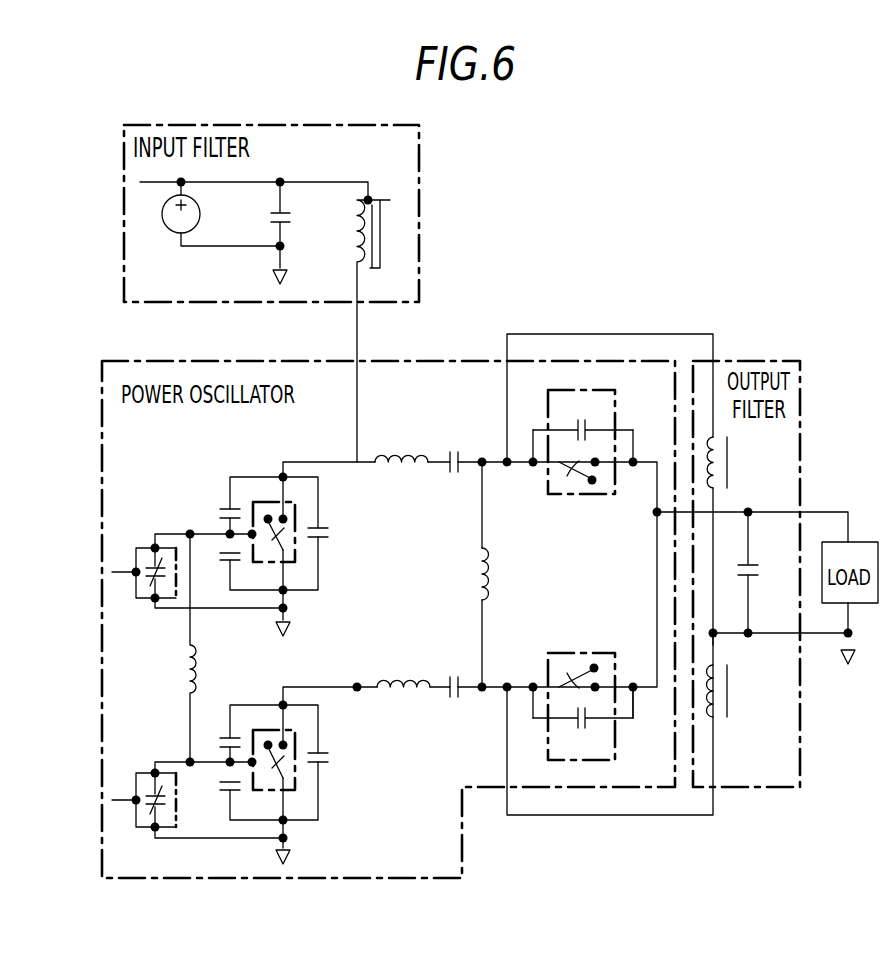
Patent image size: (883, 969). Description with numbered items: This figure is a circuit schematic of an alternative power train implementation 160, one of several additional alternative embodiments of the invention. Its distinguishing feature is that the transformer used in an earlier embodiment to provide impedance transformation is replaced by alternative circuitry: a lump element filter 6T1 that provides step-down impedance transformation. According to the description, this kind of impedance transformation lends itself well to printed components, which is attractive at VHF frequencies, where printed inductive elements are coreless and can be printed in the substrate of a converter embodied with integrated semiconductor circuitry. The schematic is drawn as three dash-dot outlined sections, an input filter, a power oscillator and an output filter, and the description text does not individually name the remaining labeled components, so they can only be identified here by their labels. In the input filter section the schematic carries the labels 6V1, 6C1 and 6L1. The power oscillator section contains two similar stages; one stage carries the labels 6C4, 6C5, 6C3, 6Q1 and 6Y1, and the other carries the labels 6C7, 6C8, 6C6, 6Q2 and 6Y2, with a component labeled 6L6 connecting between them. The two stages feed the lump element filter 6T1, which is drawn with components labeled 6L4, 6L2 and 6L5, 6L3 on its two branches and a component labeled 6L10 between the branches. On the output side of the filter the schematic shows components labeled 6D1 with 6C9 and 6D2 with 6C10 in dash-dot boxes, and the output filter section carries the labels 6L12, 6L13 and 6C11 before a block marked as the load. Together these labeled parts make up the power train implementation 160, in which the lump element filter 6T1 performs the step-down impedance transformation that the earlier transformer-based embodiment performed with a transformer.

The DC voltage source 6V1 is at (167, 207).
The input filter capacitor 6C1 is at (265, 233).
The RF choke inductor 6L1 is at (358, 331).
The inductor 6L4 is at (401, 447).
The inductor/coupling element 6L2 is at (456, 451).
The inductor 6L5 is at (403, 671).
The inductor/coupling element 6L3 is at (456, 675).
The lump element filter 6T1 is at (463, 574).
The inductor 6L10 is at (504, 574).
The switching diode 6D1 is at (582, 457).
The capacitor 6C9 is at (583, 420).
The switching diode 6D2 is at (581, 695).
The capacitor 6C10 is at (583, 732).
The RF choke inductor 6L12 is at (735, 462).
The RF choke inductor 6L13 is at (736, 691).
The output filter capacitor 6C11 is at (762, 572).
The capacitor 6C4 is at (219, 501).
The capacitor 6C5 is at (218, 567).
The capacitor 6C3 is at (327, 521).
The transistor 6Q1 is at (290, 560).
The crystal resonator 6Y1 is at (144, 584).
The inductor 6L6 is at (208, 648).
The capacitor 6C7 is at (219, 729).
The capacitor 6C8 is at (218, 795).
The capacitor 6C6 is at (327, 747).
The transistor 6Q2 is at (290, 788).
The crystal resonator 6Y2 is at (144, 811).
The power train implementation 160 is at (758, 867).